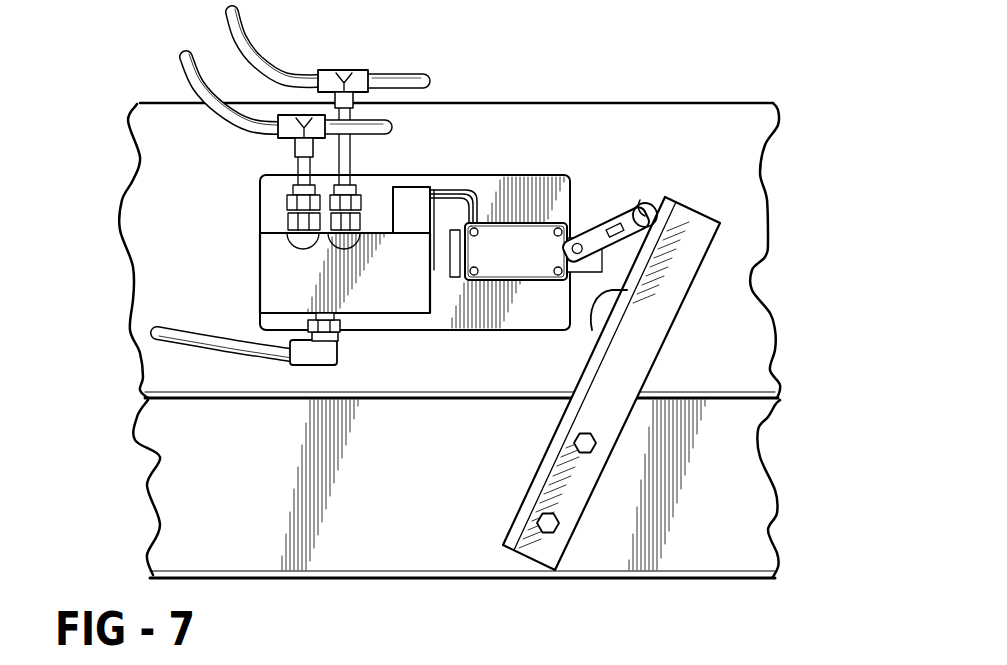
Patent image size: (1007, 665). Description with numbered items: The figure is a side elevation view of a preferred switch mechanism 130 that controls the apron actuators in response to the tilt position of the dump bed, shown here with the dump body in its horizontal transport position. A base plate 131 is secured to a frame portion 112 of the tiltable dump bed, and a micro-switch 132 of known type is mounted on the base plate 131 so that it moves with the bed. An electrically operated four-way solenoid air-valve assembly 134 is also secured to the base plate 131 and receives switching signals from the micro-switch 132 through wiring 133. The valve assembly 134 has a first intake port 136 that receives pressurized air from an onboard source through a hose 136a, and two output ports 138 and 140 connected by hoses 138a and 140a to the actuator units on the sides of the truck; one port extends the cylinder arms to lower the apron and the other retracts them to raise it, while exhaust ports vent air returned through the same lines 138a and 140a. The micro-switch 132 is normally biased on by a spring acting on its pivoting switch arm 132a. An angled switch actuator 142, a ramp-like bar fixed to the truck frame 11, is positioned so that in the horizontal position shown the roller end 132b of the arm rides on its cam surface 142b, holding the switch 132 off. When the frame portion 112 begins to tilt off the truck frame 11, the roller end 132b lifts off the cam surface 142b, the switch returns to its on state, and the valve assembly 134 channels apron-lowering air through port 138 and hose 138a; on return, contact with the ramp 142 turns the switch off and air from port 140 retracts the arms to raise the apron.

The truck frame 11 is at (742, 498).
The frame portion of dump bed 112 is at (738, 242).
The switch mechanism 130 is at (690, 163).
The base plate 131 is at (500, 183).
The micro-switch 132 is at (530, 240).
The pivoting switch arm 132a is at (607, 207).
The roller end 132b is at (640, 200).
The wiring 133 is at (452, 185).
The four-way solenoid air-valve assembly 134 is at (273, 270).
The first intake port 136 is at (335, 318).
The intake hose 136a is at (175, 340).
The first output port 138 is at (260, 232).
The first output hose 138a is at (293, 123).
The second output port 140 is at (362, 250).
The second output hose 140a is at (343, 77).
The switch actuator 142 is at (637, 355).
The cam surface 142b is at (627, 292).